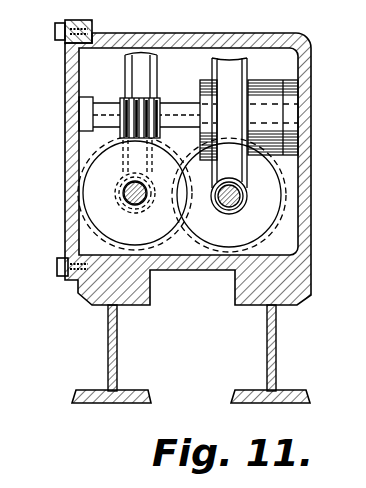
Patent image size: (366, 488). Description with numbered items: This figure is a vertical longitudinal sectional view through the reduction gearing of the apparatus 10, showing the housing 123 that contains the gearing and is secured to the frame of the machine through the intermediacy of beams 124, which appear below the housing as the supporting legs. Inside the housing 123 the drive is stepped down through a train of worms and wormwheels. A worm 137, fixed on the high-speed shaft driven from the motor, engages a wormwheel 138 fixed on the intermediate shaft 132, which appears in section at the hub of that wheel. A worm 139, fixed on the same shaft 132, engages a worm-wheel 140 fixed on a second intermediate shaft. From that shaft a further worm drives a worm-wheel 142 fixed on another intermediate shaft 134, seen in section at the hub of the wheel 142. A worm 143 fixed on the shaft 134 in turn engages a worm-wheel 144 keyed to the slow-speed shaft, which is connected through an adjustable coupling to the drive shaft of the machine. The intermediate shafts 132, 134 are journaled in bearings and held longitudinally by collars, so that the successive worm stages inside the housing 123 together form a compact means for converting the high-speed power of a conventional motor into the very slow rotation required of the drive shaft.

The machine housing 10 is at (158, 202).
The housing 123 is at (192, 272).
The beams 124 is at (267, 352).
The intermediate shaft 132 is at (125, 200).
The intermediate shaft 134 is at (247, 199).
The worm 137 is at (118, 98).
The wormwheel 138 is at (135, 193).
The worm 139 is at (124, 190).
The worm-wheel 140 is at (142, 79).
The worm-wheel 142 is at (229, 155).
The worm 143 is at (243, 207).
The worm-wheel 144 is at (232, 67).